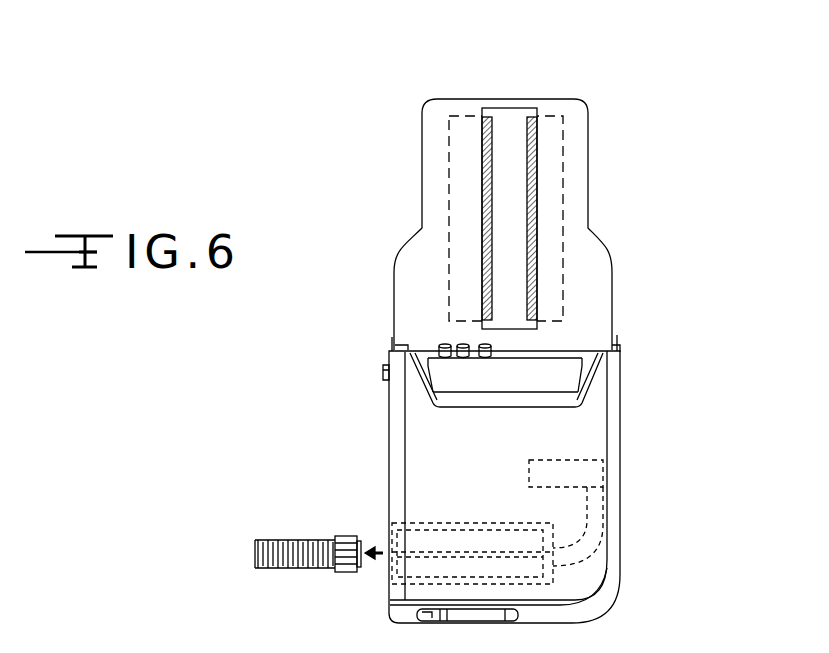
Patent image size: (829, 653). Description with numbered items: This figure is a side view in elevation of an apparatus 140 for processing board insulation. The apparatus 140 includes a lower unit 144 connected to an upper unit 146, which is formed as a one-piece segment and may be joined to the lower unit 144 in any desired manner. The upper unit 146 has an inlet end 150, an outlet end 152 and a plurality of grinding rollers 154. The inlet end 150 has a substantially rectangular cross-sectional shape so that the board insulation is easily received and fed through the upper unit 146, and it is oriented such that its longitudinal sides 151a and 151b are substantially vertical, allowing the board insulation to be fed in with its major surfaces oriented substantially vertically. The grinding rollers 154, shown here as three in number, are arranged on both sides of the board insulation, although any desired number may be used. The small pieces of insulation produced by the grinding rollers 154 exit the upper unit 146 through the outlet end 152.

The apparatus 140 is at (692, 150).
The lower unit 144 is at (389, 412).
The upper unit 146 is at (402, 249).
The inlet end 150 is at (508, 107).
The longitudinal side 151a is at (483, 170).
The longitudinal side 151b is at (537, 238).
The outlet end 152 is at (541, 351).
The grinding rollers 154 is at (565, 281).